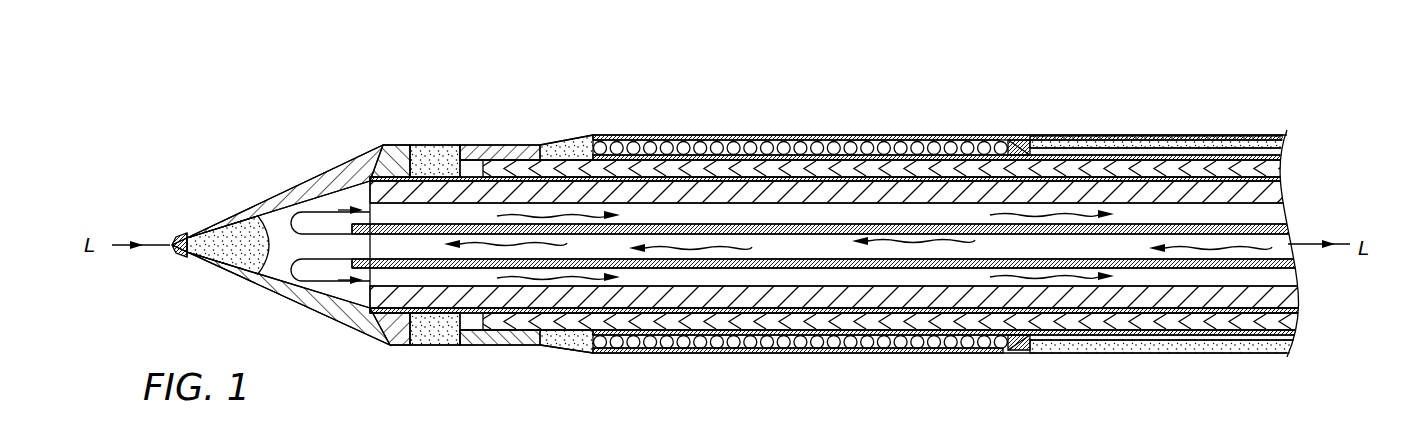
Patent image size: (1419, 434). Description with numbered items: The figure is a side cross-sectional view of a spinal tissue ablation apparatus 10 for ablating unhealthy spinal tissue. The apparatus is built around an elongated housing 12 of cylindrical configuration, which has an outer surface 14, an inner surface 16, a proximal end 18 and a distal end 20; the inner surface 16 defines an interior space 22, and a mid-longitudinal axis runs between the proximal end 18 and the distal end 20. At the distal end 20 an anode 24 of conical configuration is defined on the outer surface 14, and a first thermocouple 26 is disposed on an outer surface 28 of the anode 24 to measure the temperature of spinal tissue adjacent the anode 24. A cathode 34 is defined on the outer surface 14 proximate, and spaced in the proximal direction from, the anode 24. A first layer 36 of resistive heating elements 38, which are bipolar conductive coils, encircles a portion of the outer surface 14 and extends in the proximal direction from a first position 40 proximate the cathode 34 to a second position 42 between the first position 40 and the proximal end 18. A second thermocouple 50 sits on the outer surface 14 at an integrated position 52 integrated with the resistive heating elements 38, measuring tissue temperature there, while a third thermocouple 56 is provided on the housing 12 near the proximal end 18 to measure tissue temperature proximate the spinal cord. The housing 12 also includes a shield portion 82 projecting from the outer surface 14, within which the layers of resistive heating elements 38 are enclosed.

The spinal tissue ablation apparatus 10 is at (572, 80).
The elongated housing 12 is at (432, 332).
The outer surface 14 is at (1143, 137).
The inner surface 16 is at (1193, 343).
The proximal end 18 is at (1288, 147).
The distal end 20 is at (283, 186).
The interior space 22 is at (1217, 273).
The anode 24 is at (312, 314).
The first thermocouple 26 is at (172, 239).
The outer surface of the anode 28 is at (230, 282).
The cathode 34 is at (485, 145).
The first layer of resistive heating elements 36 is at (617, 137).
The resistive heating elements 38 is at (680, 150).
The first position 40 is at (586, 143).
The second position 42 is at (1013, 140).
The second thermocouple 50 is at (813, 148).
The integrated position 52 is at (827, 148).
The third thermocouple 56 is at (1090, 142).
The shield portion 82 is at (953, 143).